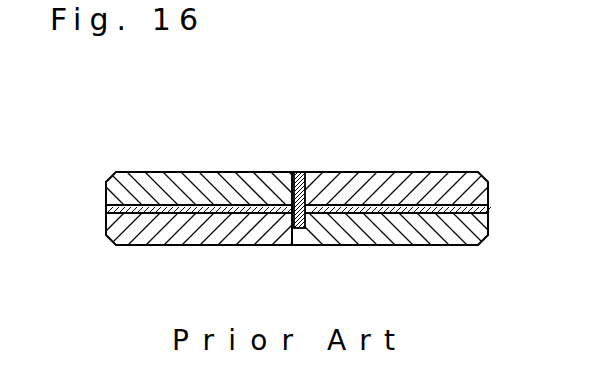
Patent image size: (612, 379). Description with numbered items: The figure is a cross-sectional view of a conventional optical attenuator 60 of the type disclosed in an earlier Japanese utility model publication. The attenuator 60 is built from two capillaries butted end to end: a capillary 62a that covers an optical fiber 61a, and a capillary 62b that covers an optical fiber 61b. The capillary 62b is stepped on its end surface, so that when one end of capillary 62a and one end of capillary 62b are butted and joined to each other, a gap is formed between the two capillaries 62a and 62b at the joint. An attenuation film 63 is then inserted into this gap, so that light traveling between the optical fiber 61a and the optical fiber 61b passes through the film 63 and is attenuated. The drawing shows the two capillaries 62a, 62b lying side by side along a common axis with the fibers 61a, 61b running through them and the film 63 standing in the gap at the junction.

The optical attenuator 60 is at (278, 76).
The optical fiber 61a is at (136, 214).
The optical fiber 61b is at (369, 214).
The capillary 62a is at (172, 172).
The capillary 62b is at (405, 172).
The attenuation film 63 is at (294, 172).